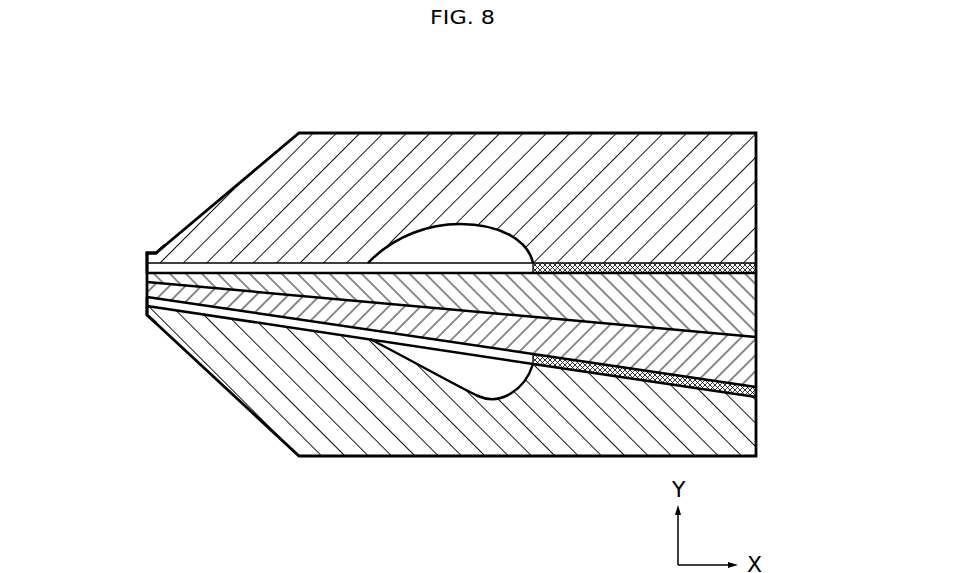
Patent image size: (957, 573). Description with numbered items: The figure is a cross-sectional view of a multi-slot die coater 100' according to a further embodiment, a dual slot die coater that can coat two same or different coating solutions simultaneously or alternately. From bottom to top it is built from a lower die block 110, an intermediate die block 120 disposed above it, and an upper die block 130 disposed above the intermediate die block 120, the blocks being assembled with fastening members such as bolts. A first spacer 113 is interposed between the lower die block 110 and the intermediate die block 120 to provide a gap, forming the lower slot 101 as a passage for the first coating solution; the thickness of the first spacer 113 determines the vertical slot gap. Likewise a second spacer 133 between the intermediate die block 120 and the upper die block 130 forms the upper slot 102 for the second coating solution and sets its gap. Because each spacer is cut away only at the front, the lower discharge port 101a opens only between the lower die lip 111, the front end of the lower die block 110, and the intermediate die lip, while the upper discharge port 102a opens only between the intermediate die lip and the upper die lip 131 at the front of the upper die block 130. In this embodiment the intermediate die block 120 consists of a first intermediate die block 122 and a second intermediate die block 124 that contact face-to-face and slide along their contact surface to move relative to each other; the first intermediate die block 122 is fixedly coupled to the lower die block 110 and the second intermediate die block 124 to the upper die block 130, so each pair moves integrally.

The multi-slot die coater 100' is at (451, 258).
The upper die block 130 is at (748, 190).
The second spacer 133 is at (756, 268).
The second intermediate die block 124 is at (750, 303).
The first intermediate die block 122 is at (750, 364).
The intermediate die block 120 is at (820, 292).
The first spacer 113 is at (756, 393).
The lower die block 110 is at (750, 430).
The upper slot 102 is at (254, 268).
The lower slot 101 is at (256, 318).
The upper die lip 131 is at (150, 253).
The lower die lip 111 is at (148, 316).
The upper discharge port 102a is at (136, 262).
The lower discharge port 101a is at (136, 294).